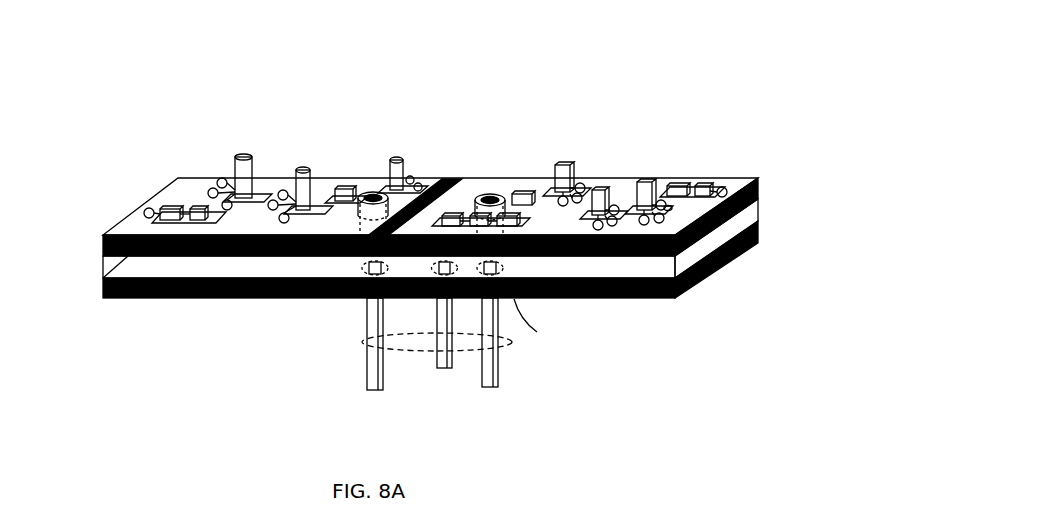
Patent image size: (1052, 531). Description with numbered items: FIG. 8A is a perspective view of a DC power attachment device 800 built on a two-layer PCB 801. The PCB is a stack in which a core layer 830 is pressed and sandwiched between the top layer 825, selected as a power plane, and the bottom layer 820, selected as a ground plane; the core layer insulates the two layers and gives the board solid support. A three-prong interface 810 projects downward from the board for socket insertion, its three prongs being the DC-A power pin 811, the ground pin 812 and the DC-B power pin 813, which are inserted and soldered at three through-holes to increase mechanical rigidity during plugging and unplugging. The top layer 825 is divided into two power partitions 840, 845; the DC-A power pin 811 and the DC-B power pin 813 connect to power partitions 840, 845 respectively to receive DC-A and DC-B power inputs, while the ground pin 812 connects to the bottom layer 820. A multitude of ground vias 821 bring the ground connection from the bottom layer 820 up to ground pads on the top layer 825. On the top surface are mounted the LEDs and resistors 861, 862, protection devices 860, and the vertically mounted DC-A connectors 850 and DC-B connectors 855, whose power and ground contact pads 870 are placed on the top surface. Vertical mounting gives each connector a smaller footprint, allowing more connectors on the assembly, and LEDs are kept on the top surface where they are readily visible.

The DC power attachment device 800 is at (673, 59).
The two-layer PCB 801 is at (768, 178).
The three-prong interface 810 is at (362, 341).
The DC-A power pin 811 is at (375, 392).
The ground pin 812 is at (444, 370).
The DC-B power pin 813 is at (500, 380).
The bottom layer 820 is at (204, 298).
The ground via 821 is at (668, 208).
The top layer 825 is at (728, 182).
The core layer 830 is at (102, 267).
The power partition 840 is at (192, 192).
The power partition 845 is at (696, 203).
The DC-A connectors 850 is at (302, 170).
The DC-B connectors 855 is at (645, 182).
The protection devices 860 is at (512, 193).
The LEDs and resistors 861 is at (170, 207).
The LEDs and resistors 862 is at (518, 225).
The contact pads 870 is at (556, 164).